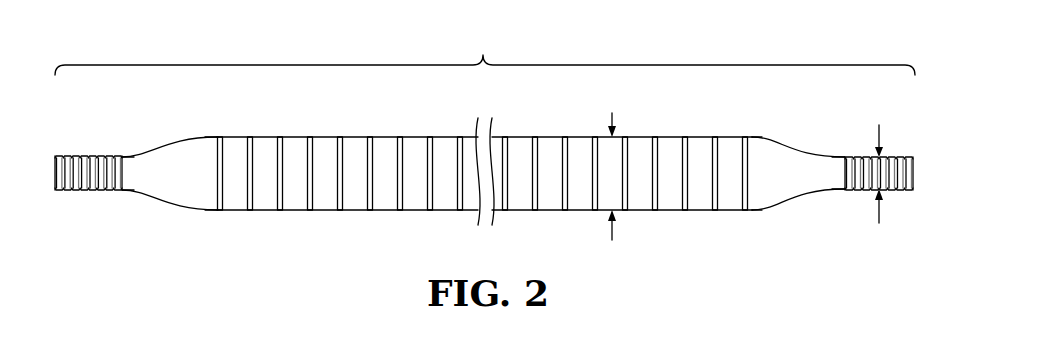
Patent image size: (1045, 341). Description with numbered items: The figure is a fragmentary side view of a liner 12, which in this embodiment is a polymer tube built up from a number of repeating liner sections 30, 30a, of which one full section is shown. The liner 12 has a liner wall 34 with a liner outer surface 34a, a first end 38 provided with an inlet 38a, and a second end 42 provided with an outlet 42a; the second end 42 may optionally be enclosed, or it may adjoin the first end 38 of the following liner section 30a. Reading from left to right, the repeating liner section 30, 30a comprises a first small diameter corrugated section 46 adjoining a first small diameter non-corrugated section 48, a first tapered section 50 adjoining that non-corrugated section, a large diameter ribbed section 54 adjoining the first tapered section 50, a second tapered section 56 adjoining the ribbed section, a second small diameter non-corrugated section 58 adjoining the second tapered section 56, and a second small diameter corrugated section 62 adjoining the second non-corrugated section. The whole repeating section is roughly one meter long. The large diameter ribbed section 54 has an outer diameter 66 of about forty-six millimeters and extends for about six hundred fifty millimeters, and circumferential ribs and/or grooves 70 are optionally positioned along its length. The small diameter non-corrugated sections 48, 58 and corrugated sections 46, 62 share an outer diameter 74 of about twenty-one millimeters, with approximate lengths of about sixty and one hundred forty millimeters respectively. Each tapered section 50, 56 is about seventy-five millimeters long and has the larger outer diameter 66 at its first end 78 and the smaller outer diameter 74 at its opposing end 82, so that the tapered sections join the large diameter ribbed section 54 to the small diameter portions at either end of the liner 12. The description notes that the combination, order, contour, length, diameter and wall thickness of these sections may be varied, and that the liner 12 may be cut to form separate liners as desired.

The liner 12 is at (770, 46).
The liner section 30 is at (482, 153).
The second liner section 30a is at (485, 65).
The liner wall 34 is at (269, 171).
The liner outer surface 34a is at (670, 194).
The first end 38 is at (53, 181).
The inlet 38a is at (54, 170).
The second end 42 is at (912, 184).
The outlet 42a is at (913, 165).
The first small diameter corrugated section 46 is at (122, 117).
The first small diameter non-corrugated section 48 is at (122, 117).
The first tapered section 50 is at (153, 117).
The large diameter ribbed section 54 is at (218, 117).
The second tapered section 56 is at (813, 117).
The second small diameter non-corrugated section 58 is at (813, 117).
The second small diameter corrugated section 62 is at (847, 117).
The outer diameter 66 is at (612, 232).
The circumferential ribs and/or grooves 70 is at (371, 211).
The outer diameter 74 is at (879, 214).
The first end of tapered section 78 is at (200, 211).
The opposing end of tapered section 82 is at (153, 198).